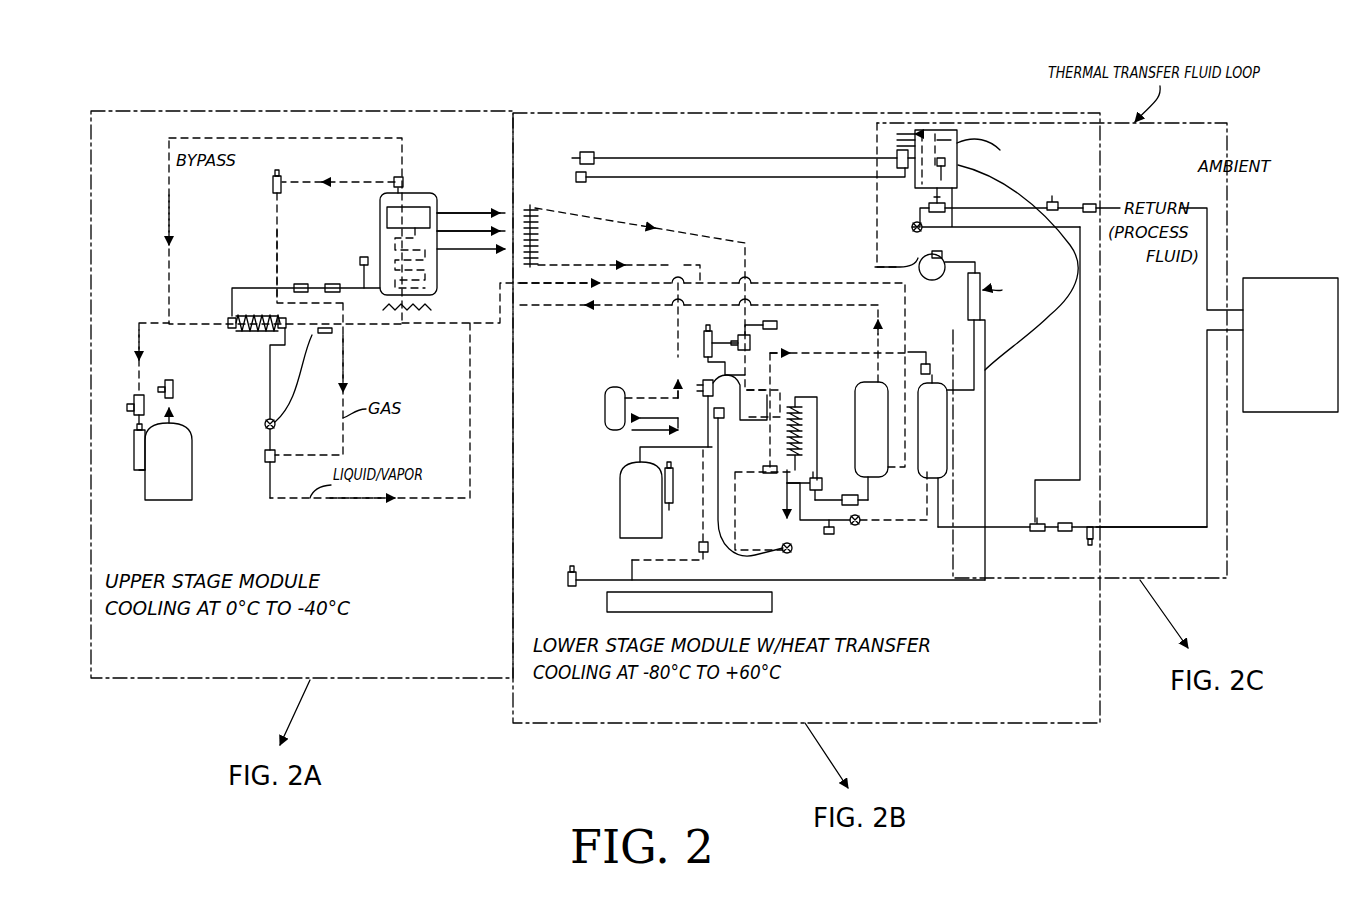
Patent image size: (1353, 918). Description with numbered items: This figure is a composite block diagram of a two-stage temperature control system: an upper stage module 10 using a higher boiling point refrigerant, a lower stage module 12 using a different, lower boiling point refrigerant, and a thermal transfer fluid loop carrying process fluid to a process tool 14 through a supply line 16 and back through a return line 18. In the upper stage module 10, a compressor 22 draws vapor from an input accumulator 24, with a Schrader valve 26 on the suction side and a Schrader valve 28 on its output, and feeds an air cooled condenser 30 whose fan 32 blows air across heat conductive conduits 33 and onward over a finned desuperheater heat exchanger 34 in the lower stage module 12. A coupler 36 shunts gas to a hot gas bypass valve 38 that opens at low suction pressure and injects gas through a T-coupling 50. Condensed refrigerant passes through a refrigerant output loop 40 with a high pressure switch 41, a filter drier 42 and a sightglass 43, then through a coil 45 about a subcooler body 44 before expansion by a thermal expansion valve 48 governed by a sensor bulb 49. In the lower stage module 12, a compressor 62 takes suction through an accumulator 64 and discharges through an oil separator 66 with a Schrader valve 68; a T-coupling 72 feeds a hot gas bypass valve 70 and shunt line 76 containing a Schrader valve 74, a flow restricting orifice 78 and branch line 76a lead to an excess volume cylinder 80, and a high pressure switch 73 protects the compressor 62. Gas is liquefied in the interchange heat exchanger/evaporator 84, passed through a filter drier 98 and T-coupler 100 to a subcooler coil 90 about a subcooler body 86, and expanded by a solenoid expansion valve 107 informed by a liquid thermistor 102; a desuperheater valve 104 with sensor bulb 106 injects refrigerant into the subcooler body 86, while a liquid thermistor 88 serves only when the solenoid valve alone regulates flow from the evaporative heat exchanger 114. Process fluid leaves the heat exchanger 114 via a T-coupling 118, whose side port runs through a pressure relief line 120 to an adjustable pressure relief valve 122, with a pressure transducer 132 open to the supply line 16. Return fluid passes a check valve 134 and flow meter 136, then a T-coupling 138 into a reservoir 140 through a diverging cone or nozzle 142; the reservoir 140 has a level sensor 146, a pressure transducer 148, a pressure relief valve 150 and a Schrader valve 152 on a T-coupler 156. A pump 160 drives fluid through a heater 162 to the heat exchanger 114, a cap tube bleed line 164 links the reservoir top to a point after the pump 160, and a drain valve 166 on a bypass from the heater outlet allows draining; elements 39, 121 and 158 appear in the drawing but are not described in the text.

The upper stage module 10 is at (232, 108).
The lower stage module 12 is at (733, 110).
The process tool 14 is at (1290, 278).
The supply line 16 is at (1208, 456).
The return line 18 is at (1210, 230).
The compressor 22 is at (192, 462).
The input accumulator 24 is at (134, 452).
The Schrader valve 26 is at (134, 398).
The Schrader valve 28 is at (173, 390).
The air cooled condenser 30 is at (412, 193).
The fan 32 is at (381, 213).
The heat conductive conduits 33 is at (425, 265).
The finned conduit desuperheater heat exchanger 34 is at (540, 228).
The coupler 36 is at (396, 180).
The hot gas bypass valve 38 is at (272, 190).
The bypass line 39 is at (278, 230).
The refrigerant output loop 40 is at (312, 262).
The high pressure switch 41 is at (364, 257).
The filter drier 42 is at (333, 284).
The sightglass 43 is at (299, 284).
The subcooler body 44 is at (250, 317).
The coil 45 is at (260, 340).
The thermal expansion valve 48 is at (276, 427).
The sensor bulb 49 is at (322, 334).
The T-coupling 50 is at (265, 460).
The compressor 62 is at (620, 478).
The accumulator 64 is at (673, 492).
The oil separator 66 is at (605, 402).
The Schrader valve 68 is at (683, 358).
The hot gas bypass valve 70 is at (704, 341).
The T-coupling 72 is at (738, 340).
The high pressure switch 73 is at (777, 325).
The Schrader valve 74 is at (703, 385).
The shunt line 76 is at (740, 397).
The branch line 76a is at (703, 500).
The flow restricting orifice 78 is at (699, 548).
The excess volume cylinder 80 is at (775, 601).
The interchange heat exchanger/evaporator 84 is at (871, 441).
The subcooler body 86 is at (796, 400).
The liquid thermistor 88 is at (924, 364).
The subcooler coil 90 is at (804, 418).
The filter drier 98 is at (858, 502).
The T-coupler 100 is at (822, 484).
The liquid thermistor 102 is at (834, 535).
The desuperheater valve 104 is at (792, 550).
The sensor bulb 106 is at (724, 420).
The solenoid expansion valve 107 is at (860, 524).
The evaporative heat exchanger 114 is at (934, 451).
The T-coupling 118 is at (1034, 522).
The pressure relief line 120 is at (1080, 386).
The filter 121 is at (1065, 523).
The adjustable pressure relief valve 122 is at (882, 267).
The pressure transducer 132 is at (1088, 544).
The check valve 134 is at (1092, 204).
The flow meter 136 is at (1054, 200).
The T-coupling 138 is at (911, 226).
The reservoir 140 is at (929, 208).
The diverging internal cone or nozzle 142 is at (957, 170).
The level sensor 146 is at (950, 117).
The pressure transducer 148 is at (898, 113).
The pressure relief valve 150 is at (900, 136).
The Schrader valve 152 is at (586, 180).
The T-coupler 156 is at (897, 160).
The line 158 is at (596, 156).
The pump 160 is at (945, 262).
The heater 162 is at (981, 312).
The cap tube bleed line 164 is at (962, 141).
The drain valve 166 is at (568, 578).